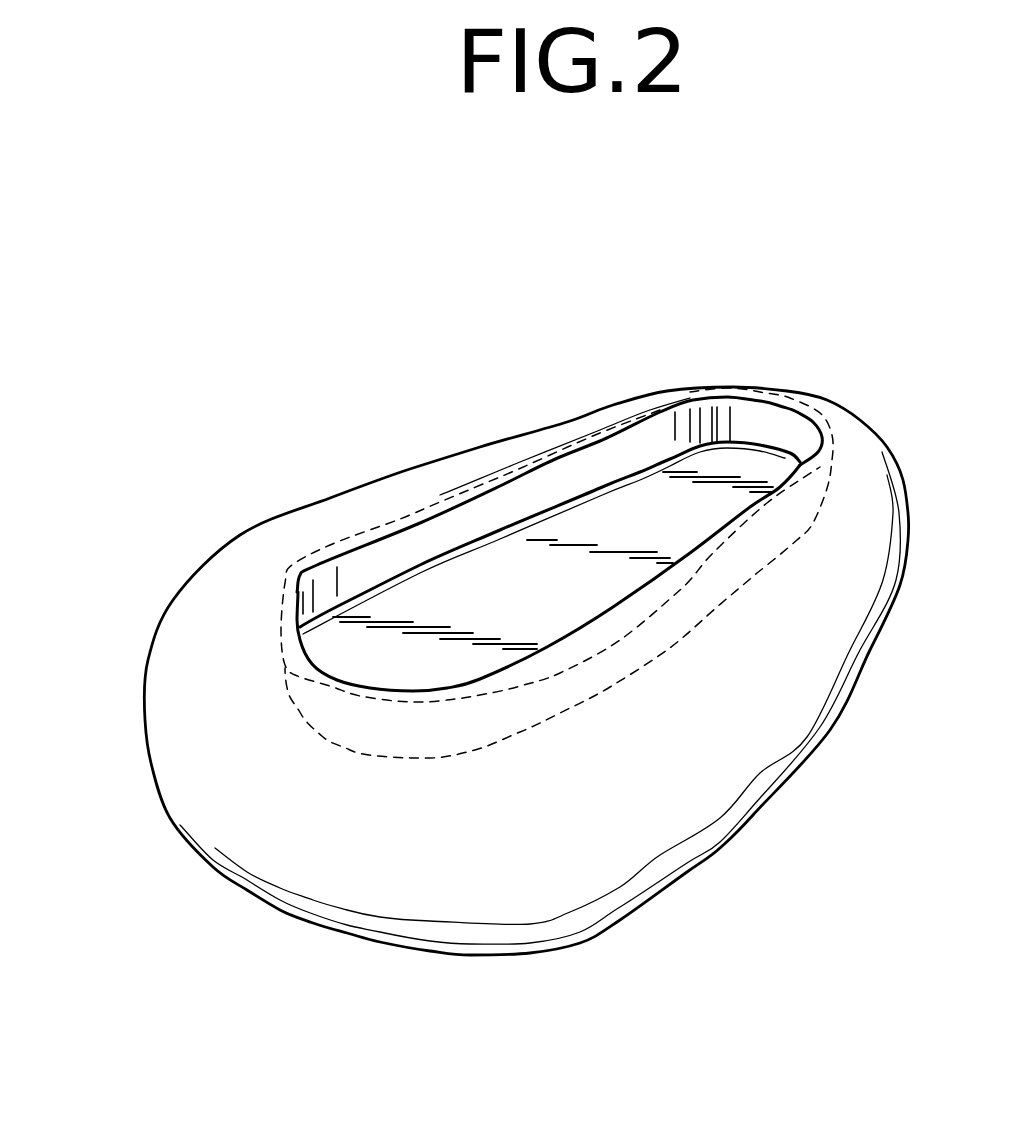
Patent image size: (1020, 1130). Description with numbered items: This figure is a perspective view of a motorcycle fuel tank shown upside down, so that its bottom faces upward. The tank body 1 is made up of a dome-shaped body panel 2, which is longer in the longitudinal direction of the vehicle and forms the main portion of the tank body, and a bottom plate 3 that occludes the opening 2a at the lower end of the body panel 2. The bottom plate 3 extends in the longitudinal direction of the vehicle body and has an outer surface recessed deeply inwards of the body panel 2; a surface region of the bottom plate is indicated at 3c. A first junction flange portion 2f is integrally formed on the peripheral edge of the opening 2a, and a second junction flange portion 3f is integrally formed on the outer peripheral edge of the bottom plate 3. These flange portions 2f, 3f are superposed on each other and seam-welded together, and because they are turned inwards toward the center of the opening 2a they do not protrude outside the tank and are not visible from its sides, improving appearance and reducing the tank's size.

The tank body 1 is at (55, 462).
The body panel 2 is at (208, 628).
The opening 2a is at (587, 517).
The first junction flange portion 2f is at (603, 425).
The bottom plate 3 is at (512, 565).
The top surface of insert 3c is at (650, 493).
The second junction flange portion 3f is at (627, 580).